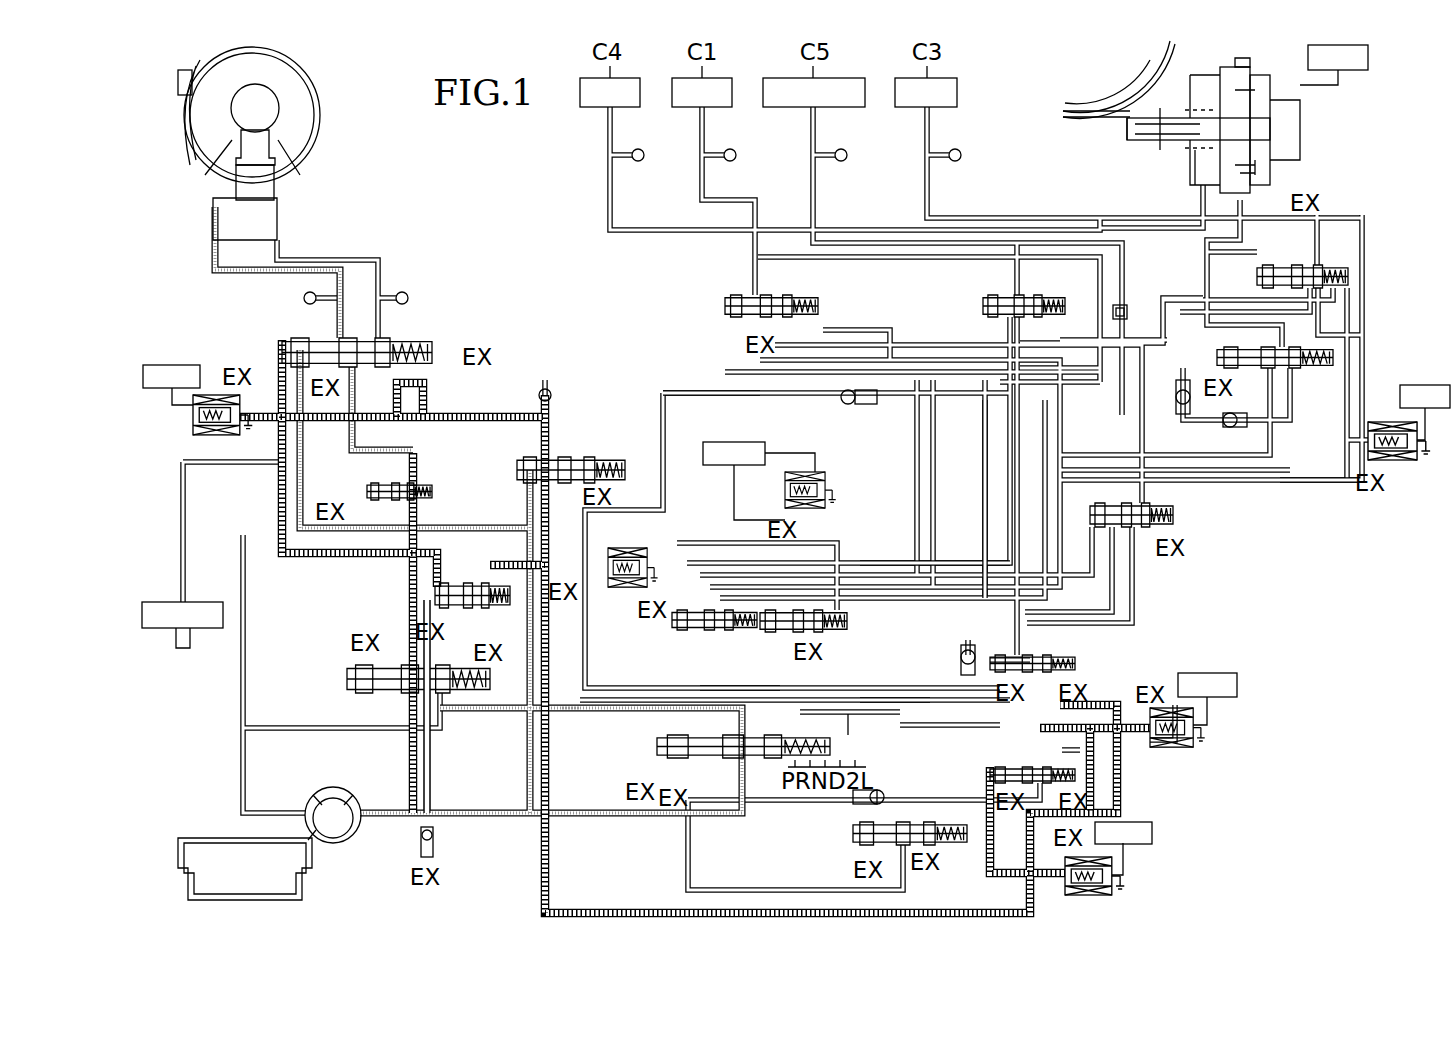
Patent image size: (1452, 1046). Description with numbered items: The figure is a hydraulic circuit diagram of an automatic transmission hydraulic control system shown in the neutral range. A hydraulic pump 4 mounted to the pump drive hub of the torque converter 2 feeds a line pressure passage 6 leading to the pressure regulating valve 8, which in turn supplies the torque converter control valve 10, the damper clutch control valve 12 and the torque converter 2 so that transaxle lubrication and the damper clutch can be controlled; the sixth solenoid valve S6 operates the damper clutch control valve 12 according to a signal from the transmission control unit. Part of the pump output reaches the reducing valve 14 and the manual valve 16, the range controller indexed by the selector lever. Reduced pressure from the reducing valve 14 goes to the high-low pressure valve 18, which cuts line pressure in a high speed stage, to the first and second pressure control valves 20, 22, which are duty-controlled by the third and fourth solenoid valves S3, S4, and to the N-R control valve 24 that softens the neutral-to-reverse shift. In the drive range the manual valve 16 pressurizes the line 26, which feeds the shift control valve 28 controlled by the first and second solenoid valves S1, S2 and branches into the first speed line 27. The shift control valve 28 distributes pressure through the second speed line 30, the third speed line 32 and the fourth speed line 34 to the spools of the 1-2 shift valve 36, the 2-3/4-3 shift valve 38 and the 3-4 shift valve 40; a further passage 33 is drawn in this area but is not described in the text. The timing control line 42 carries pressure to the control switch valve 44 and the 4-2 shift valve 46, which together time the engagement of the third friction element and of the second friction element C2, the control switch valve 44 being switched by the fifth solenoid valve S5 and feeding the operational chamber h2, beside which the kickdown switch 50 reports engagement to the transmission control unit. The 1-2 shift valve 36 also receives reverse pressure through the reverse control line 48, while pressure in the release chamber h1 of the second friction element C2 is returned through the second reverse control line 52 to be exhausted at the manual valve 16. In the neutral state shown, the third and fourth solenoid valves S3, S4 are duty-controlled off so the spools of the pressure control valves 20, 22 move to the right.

The torque converter 2 is at (330, 82).
The hydraulic pump 4 is at (333, 846).
The line pressure passage 6 is at (424, 772).
The pressure regulating valve 8 is at (345, 679).
The torque converter control valve 10 is at (440, 492).
The damper clutch control valve 12 is at (452, 330).
The reducing valve 14 is at (580, 450).
The manual valve 16 is at (655, 748).
The high-low pressure valve 18 is at (470, 580).
The first pressure control valve 20 is at (988, 782).
The second pressure control valve 22 is at (1080, 663).
The N-R control valve 24 is at (850, 834).
The line 26 is at (740, 686).
The first speed line 27 is at (850, 736).
The shift control valve 28 is at (695, 632).
The second speed line 30 is at (862, 560).
The third speed line 32 is at (983, 512).
The passage 33 is at (880, 690).
The fourth speed line 34 is at (875, 597).
The 1-2 shift valve 36 is at (1178, 515).
The 2-3/4-3 shift valve 38 is at (980, 302).
The 3-4 shift valve 40 is at (722, 306).
The timing control line 42 is at (1304, 486).
The control switch valve 44 is at (1323, 372).
The 4-2 shift valve 46 is at (1345, 255).
The reverse control line 48 is at (930, 737).
The kickdown switch 50 is at (1302, 112).
The second reverse control line 52 is at (690, 390).
The first solenoid valve S1 is at (812, 470).
The second solenoid valve S2 is at (628, 590).
The third solenoid valve S3 is at (1115, 876).
The fourth solenoid valve S4 is at (1195, 728).
The fifth solenoid valve S5 is at (1390, 420).
The sixth solenoid valve S6 is at (215, 390).
The second friction element C2 is at (1165, 160).
The release chamber h1 is at (1200, 178).
The operational chamber h2 is at (1268, 165).